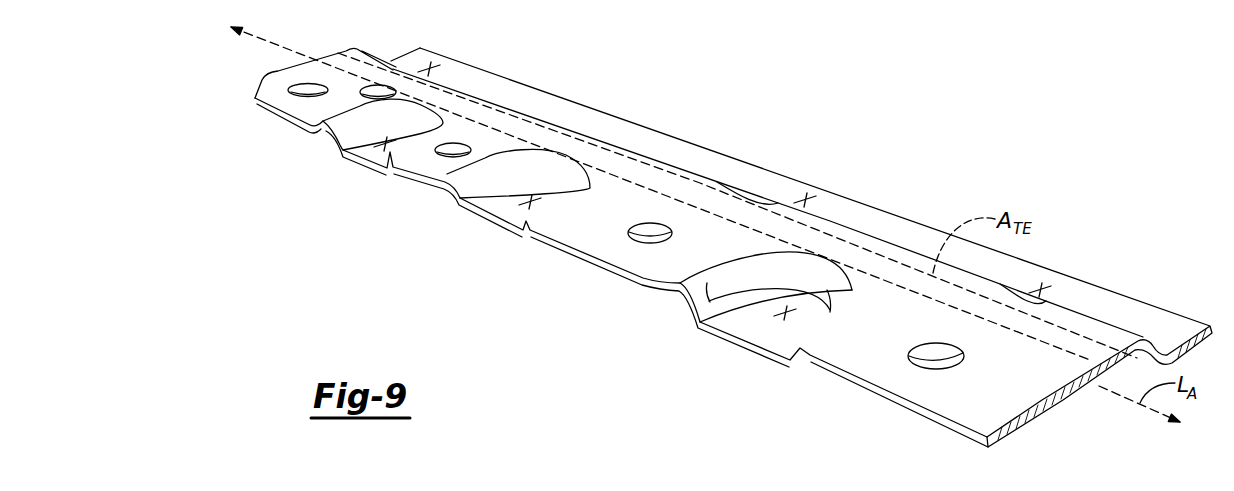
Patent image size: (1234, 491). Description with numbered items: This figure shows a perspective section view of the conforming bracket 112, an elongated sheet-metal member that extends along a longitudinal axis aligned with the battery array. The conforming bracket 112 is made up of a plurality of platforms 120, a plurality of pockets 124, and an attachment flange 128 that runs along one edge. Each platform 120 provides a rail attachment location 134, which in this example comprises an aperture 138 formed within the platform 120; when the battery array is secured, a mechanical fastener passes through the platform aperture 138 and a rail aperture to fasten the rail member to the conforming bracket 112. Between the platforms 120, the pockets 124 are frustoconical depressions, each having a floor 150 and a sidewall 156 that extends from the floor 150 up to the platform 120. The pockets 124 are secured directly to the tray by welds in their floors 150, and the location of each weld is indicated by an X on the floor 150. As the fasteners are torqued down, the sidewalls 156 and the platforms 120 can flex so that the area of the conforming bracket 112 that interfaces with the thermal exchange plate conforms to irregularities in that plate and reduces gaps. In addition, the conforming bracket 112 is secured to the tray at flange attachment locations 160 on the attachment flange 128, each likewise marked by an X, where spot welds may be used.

The conforming bracket 112 is at (1123, 313).
The platform 120 is at (606, 242).
The pocket 124 is at (757, 310).
The attachment flange 128 is at (895, 228).
The rail attachment location 134 is at (429, 163).
The aperture 138 is at (457, 144).
The floor 150 is at (773, 333).
The sidewall 156 is at (740, 296).
The flange attachment location 160 is at (812, 190).